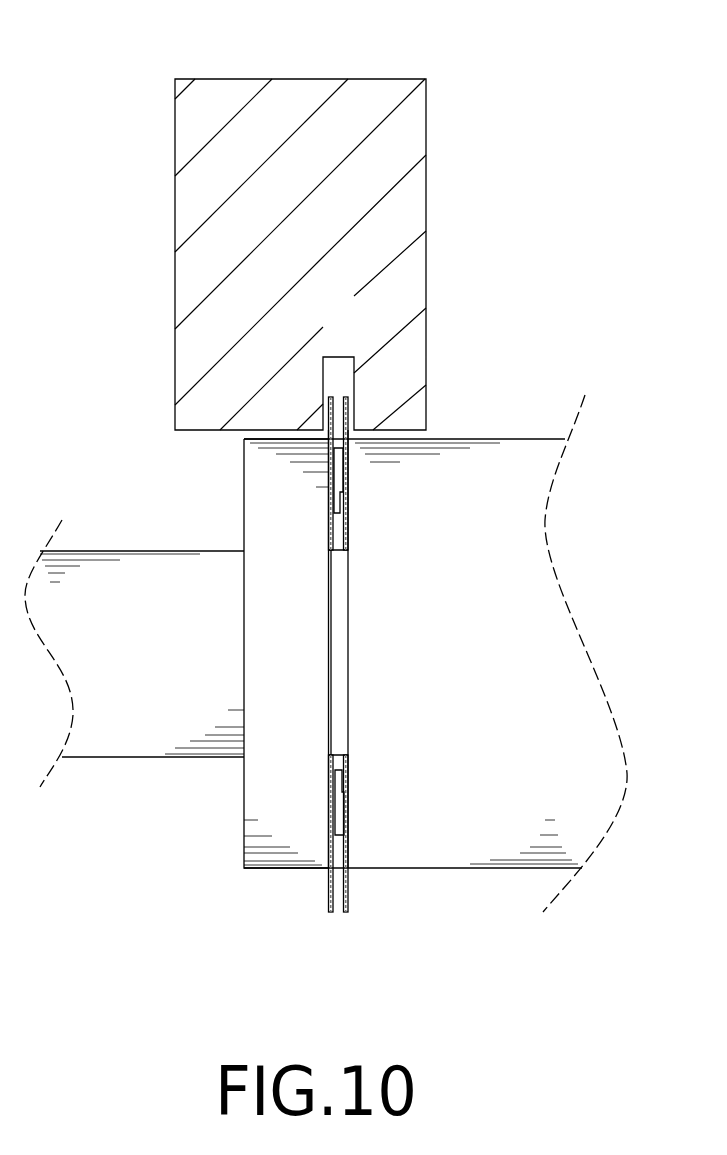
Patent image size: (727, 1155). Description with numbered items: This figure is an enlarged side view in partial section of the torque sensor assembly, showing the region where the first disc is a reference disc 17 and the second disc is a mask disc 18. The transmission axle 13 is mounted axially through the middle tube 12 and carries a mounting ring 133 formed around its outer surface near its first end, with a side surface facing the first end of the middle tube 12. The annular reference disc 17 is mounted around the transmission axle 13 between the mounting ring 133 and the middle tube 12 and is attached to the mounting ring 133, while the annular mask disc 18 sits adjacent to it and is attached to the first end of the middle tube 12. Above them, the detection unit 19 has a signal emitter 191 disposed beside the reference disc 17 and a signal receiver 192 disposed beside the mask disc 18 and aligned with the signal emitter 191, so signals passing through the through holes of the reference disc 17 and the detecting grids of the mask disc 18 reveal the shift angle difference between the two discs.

The middle tube 12 is at (413, 860).
The transmission axle 13 is at (152, 747).
The mounting ring 133 is at (287, 862).
The reference disc 17 is at (329, 528).
The mask disc 18 is at (348, 513).
The detection unit 19 is at (304, 92).
The signal emitter 191 is at (329, 400).
The signal receiver 192 is at (348, 400).